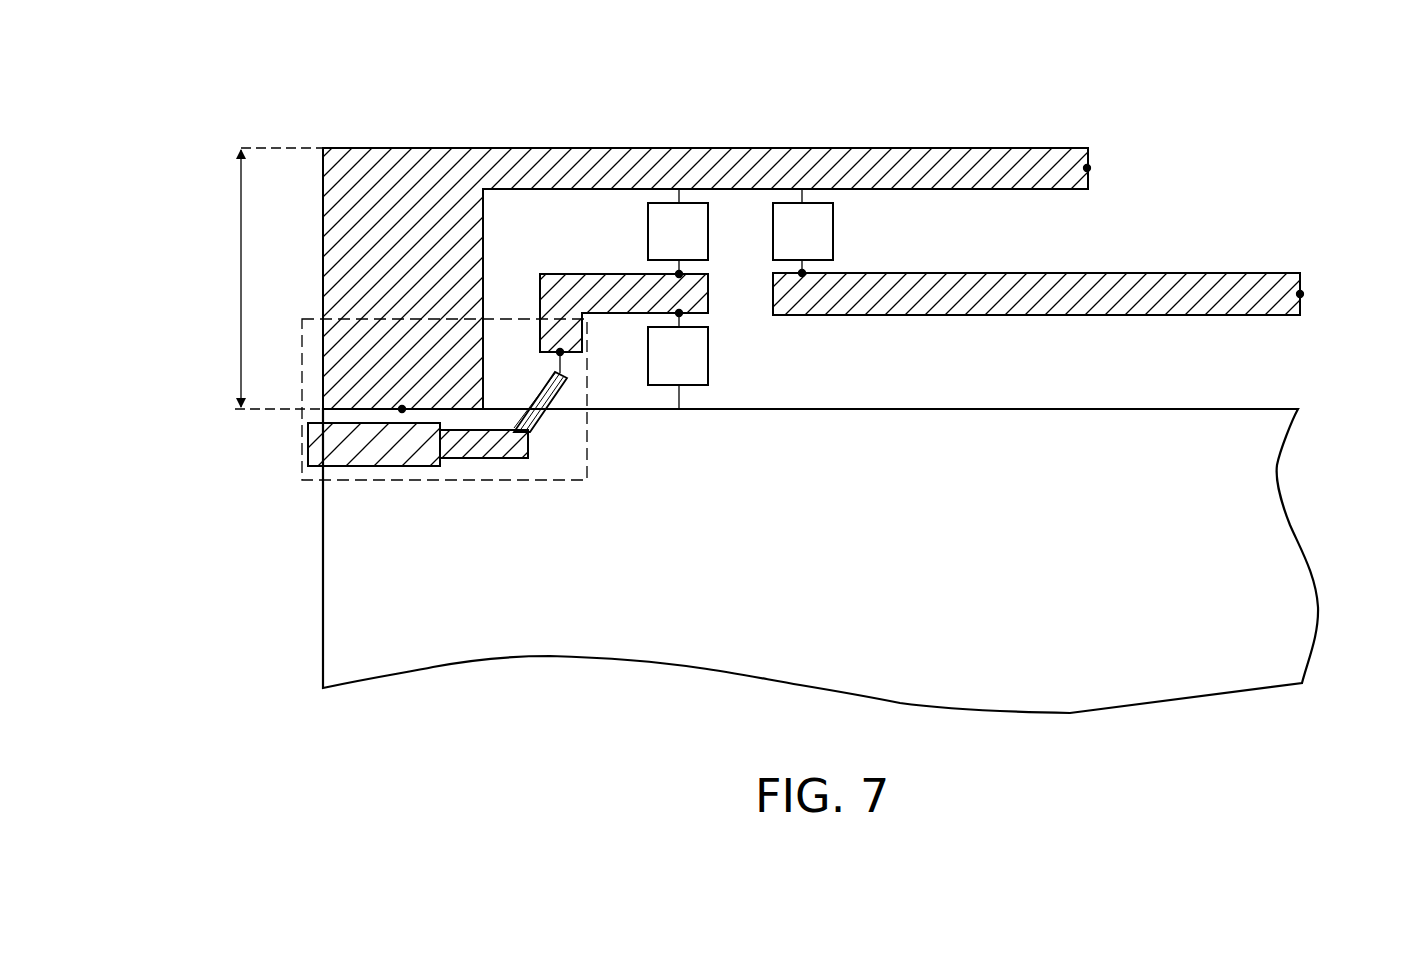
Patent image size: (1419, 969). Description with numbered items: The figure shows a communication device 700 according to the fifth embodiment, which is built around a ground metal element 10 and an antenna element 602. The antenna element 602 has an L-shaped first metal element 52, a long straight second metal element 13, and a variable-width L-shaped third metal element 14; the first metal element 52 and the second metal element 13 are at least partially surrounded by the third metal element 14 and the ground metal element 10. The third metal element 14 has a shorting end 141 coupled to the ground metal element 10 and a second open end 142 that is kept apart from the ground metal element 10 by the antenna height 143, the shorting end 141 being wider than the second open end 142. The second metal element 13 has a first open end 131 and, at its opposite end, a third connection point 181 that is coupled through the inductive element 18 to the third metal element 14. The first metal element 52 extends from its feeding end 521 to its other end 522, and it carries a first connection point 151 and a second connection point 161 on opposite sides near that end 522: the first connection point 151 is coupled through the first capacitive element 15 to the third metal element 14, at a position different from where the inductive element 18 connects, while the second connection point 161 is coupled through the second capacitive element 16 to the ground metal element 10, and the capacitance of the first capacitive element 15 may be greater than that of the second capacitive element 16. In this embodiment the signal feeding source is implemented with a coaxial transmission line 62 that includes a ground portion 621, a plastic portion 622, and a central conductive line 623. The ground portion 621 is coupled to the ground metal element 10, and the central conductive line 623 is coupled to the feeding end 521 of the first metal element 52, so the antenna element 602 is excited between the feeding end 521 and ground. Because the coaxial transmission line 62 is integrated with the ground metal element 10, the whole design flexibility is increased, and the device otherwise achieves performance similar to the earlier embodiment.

The communication device 700 is at (253, 63).
The ground metal element 10 is at (1200, 662).
The second metal element 13 is at (1028, 305).
The first open end 131 is at (1304, 294).
The third metal element 14 is at (935, 178).
The shorting end 141 is at (402, 405).
The second open end 142 is at (1091, 168).
The antenna height 143 is at (256, 278).
The first capacitive element 15 is at (708, 230).
The first connection point 151 is at (710, 295).
The second capacitive element 16 is at (648, 358).
The second connection point 161 is at (682, 316).
The inductive element 18 is at (833, 230).
The third connection point 181 is at (802, 277).
The first metal element 52 is at (620, 280).
The feeding end 521 is at (556, 355).
The second end of conductive element 522 is at (680, 277).
The antenna element 602 is at (681, 242).
The coaxial transmission line 62 is at (300, 478).
The ground portion 621 is at (485, 468).
The plastic portion 622 is at (545, 425).
The central conductive line 623 is at (563, 376).